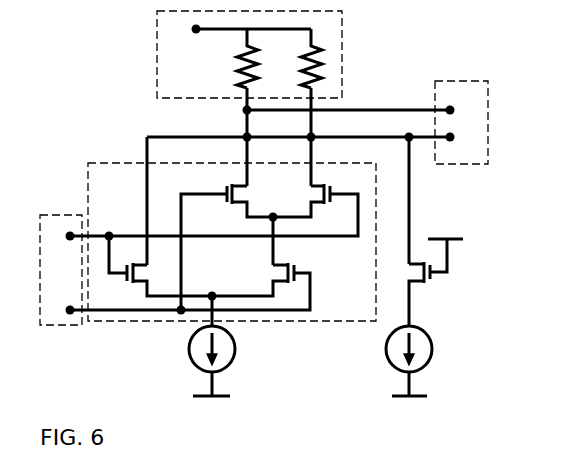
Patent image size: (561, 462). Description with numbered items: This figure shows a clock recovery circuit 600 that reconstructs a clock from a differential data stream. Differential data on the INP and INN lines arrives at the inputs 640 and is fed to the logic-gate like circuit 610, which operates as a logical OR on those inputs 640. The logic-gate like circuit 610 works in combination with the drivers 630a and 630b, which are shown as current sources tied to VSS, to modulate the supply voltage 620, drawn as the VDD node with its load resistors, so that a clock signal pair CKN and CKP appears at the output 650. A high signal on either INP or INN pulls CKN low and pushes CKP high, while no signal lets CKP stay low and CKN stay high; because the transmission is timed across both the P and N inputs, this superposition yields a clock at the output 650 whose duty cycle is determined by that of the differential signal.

The clock recovery circuit 600 is at (260, 169).
The logic-gate like circuit 610 is at (107, 158).
The supply voltage 620 is at (343, 70).
The driver 630a is at (234, 368).
The driver 630b is at (432, 325).
The inputs 640 is at (63, 333).
The output 650 is at (455, 170).